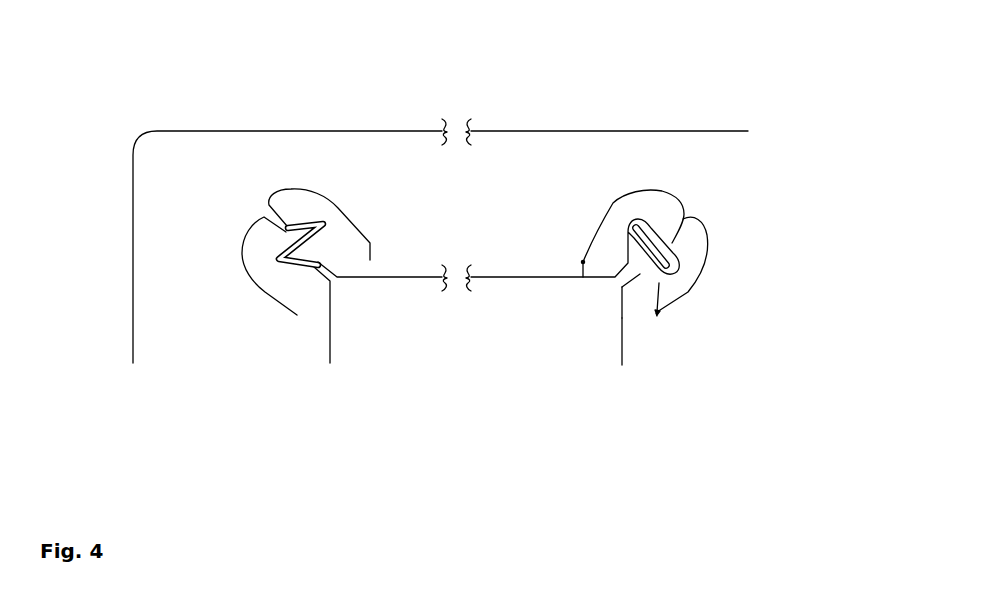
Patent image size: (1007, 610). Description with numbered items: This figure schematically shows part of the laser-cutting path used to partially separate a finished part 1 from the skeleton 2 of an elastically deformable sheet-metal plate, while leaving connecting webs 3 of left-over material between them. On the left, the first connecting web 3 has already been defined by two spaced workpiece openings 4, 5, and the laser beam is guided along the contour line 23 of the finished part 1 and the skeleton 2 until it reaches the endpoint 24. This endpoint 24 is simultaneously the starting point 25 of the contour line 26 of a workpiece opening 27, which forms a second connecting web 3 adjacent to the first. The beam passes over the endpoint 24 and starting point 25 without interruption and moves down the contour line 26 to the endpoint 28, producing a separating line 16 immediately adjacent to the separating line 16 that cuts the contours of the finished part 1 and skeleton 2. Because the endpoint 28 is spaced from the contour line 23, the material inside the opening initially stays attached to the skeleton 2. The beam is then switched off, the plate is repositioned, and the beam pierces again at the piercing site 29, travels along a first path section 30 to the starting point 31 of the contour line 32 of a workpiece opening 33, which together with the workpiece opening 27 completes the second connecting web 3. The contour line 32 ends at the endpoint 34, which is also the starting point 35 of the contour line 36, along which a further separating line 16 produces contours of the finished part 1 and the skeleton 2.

The finished part 1 is at (465, 362).
The skeleton 2 is at (187, 182).
The connecting web 3 is at (299, 212).
The workpiece opening 4 is at (319, 226).
The workpiece opening 5 is at (277, 266).
The separating line 16 is at (598, 265).
The contour line of the finished part and the skeleton 23 is at (415, 278).
The endpoint of the contour line 24 is at (572, 276).
The starting point of the contour line 25 is at (582, 279).
The contour line of the workpiece opening 26 is at (609, 171).
The workpiece opening 27 is at (625, 217).
The endpoint of the contour line 28 is at (583, 262).
The piercing site 29 is at (658, 312).
The first path section 30 is at (658, 313).
The starting point of the contour line 31 is at (656, 316).
The contour line of the workpiece opening 32 is at (760, 280).
The workpiece opening 33 is at (693, 258).
The endpoint of the contour line 34 is at (579, 340).
The starting point of the contour line 35 is at (622, 318).
The contour line 36 is at (623, 363).